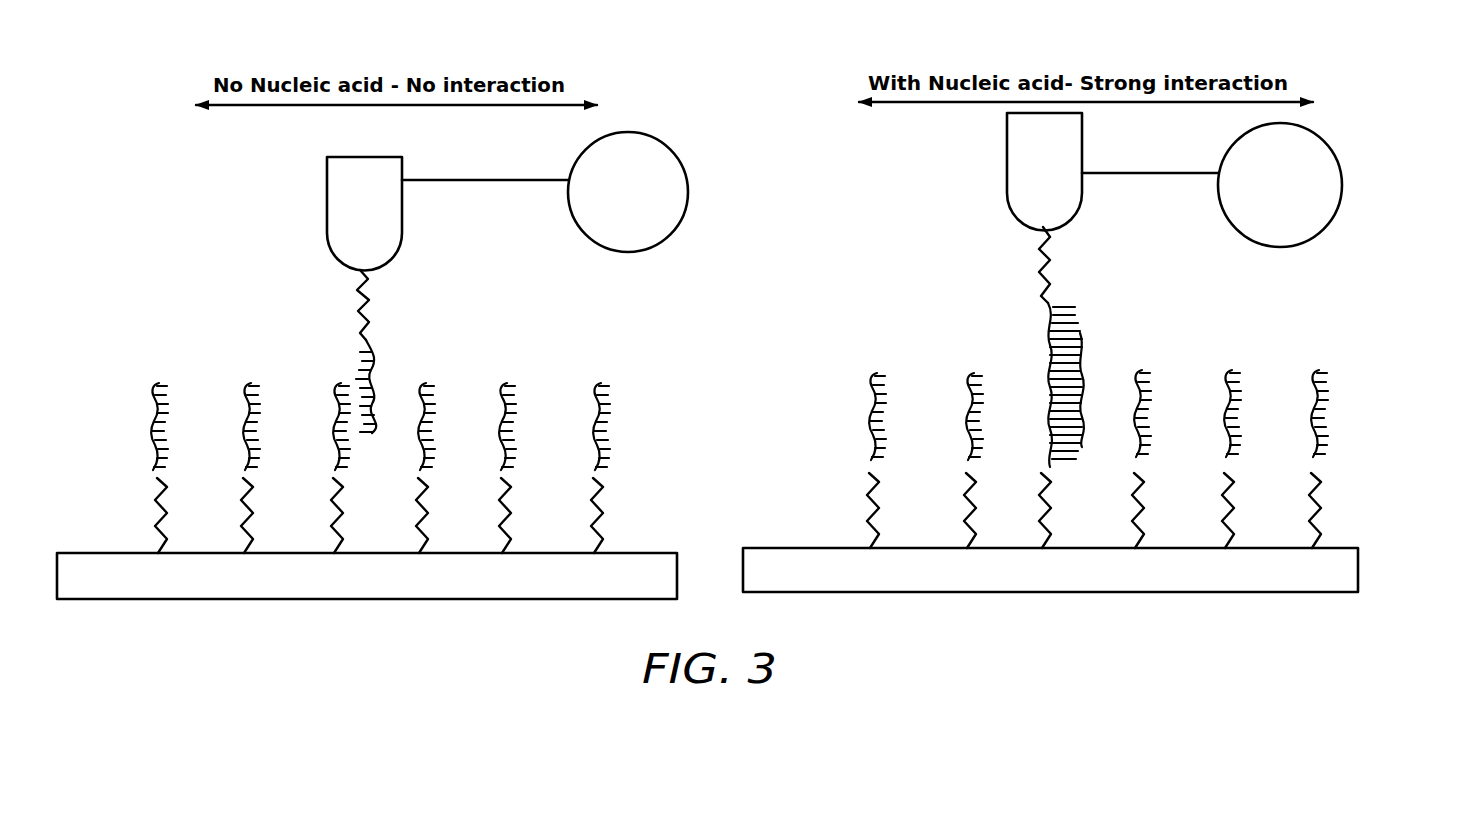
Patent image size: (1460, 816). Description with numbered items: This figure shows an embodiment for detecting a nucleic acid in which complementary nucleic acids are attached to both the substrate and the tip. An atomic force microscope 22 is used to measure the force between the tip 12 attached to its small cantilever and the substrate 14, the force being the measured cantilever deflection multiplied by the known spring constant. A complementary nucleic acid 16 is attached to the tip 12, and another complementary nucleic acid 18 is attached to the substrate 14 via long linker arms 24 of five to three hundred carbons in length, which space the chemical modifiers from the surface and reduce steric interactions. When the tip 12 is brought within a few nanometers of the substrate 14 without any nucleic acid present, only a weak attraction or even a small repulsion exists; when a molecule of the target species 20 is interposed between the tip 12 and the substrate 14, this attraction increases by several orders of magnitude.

The tip 12 is at (383, 218).
The substrate 14 is at (394, 588).
The complementary nucleic acid 16 is at (382, 372).
The complementary nucleic acid 18 is at (868, 420).
The target species 20 is at (1100, 356).
The atomic force microscope 22 is at (642, 210).
The long linker arms 24 is at (357, 305).